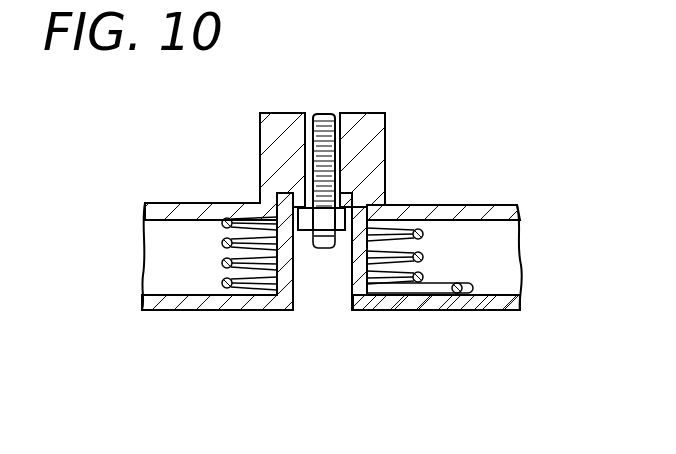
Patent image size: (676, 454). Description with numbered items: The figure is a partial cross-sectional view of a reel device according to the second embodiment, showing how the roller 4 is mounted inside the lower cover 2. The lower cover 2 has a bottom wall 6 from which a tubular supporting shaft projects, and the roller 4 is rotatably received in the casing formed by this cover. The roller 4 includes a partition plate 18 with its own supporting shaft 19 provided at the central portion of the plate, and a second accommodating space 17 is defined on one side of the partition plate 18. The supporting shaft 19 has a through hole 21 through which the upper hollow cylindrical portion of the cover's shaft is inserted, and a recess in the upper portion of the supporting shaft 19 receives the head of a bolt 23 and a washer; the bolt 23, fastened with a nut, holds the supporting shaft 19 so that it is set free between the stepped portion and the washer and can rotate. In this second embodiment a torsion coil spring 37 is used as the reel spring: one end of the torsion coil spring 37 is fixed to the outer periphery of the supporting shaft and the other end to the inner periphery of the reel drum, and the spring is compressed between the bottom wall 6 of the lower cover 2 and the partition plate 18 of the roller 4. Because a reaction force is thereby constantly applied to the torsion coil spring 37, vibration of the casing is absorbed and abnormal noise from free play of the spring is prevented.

The lower cover 2 is at (364, 306).
The roller 4 is at (388, 148).
The bottom wall 6 is at (475, 302).
The second accommodating space 17 is at (503, 260).
The partition plate 18 is at (483, 210).
The supporting shaft 19 is at (268, 148).
The through hole 21 is at (326, 116).
The bolt 23 is at (331, 117).
The torsion coil spring 37 is at (249, 266).